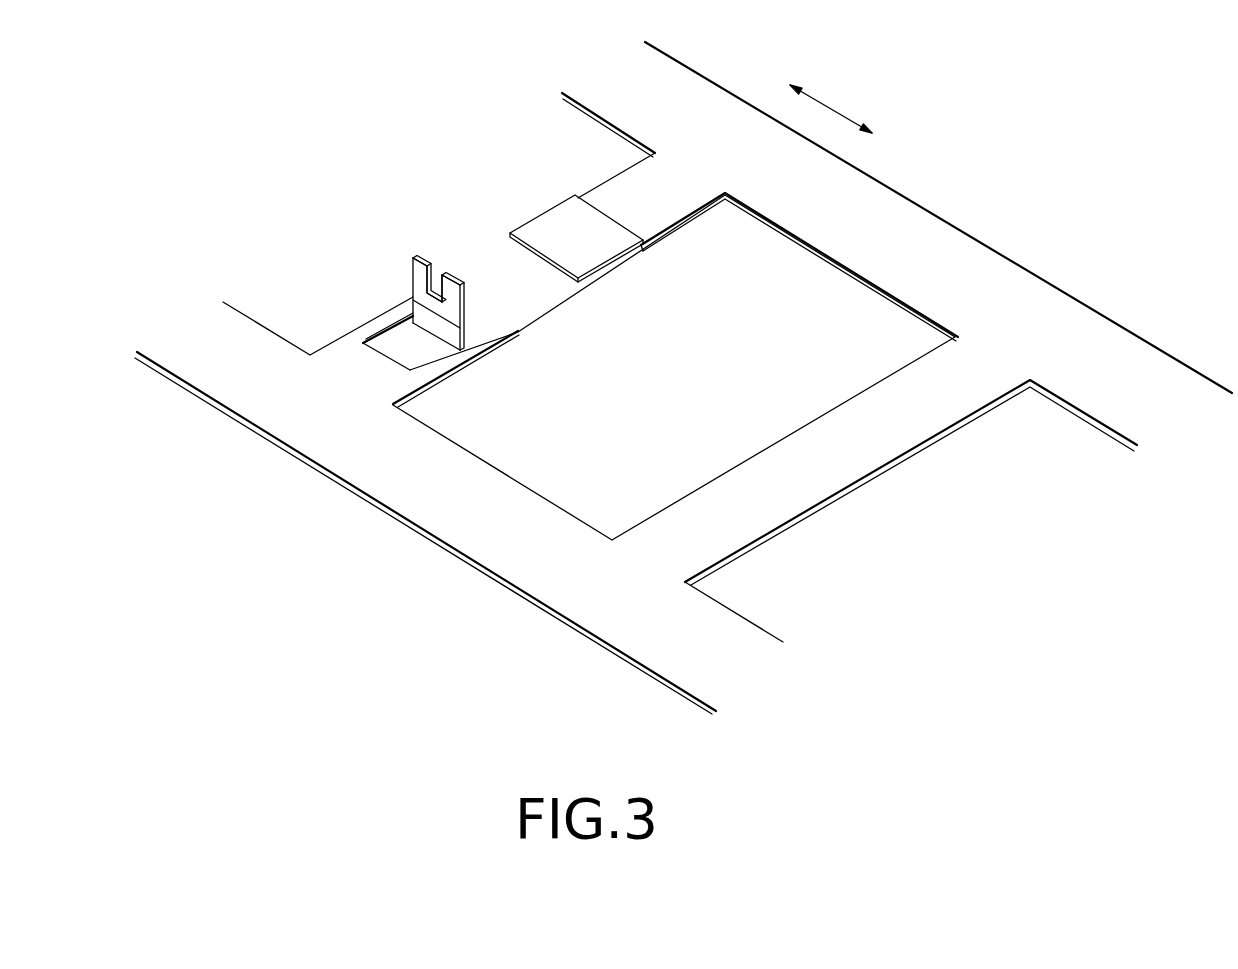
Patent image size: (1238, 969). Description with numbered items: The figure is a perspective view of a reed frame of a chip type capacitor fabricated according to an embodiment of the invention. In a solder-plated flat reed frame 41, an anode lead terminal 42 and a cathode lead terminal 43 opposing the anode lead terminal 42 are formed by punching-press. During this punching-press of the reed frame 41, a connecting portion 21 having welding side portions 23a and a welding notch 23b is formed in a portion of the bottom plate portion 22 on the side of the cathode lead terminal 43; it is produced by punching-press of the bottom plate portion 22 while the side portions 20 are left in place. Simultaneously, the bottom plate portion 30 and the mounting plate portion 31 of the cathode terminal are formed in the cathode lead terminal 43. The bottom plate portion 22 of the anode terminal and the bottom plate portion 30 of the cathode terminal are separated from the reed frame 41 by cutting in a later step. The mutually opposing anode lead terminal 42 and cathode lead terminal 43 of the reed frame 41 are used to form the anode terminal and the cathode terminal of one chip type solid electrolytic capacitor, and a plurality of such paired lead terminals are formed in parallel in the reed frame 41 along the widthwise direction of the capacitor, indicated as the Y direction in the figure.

The side portions 20 is at (392, 335).
The connecting portion 21 is at (415, 298).
The bottom plate portion 22 is at (488, 337).
The welding side portions 23a is at (467, 230).
The welding notch 23b is at (438, 283).
The bottom plate portion 30 is at (662, 215).
The mounting plate portion 31 is at (589, 252).
The reed frame 41 is at (889, 187).
The anode lead terminal 42 is at (452, 380).
The cathode lead terminal 43 is at (605, 178).